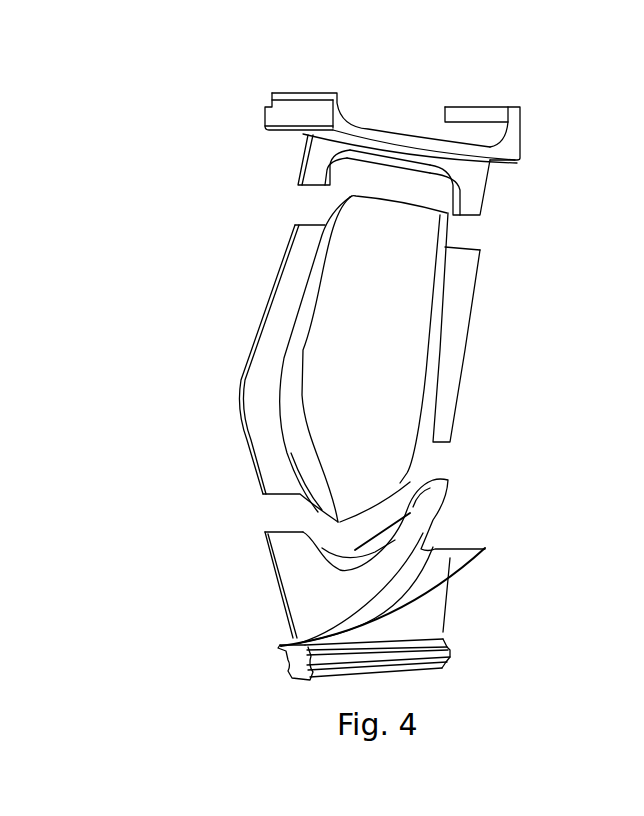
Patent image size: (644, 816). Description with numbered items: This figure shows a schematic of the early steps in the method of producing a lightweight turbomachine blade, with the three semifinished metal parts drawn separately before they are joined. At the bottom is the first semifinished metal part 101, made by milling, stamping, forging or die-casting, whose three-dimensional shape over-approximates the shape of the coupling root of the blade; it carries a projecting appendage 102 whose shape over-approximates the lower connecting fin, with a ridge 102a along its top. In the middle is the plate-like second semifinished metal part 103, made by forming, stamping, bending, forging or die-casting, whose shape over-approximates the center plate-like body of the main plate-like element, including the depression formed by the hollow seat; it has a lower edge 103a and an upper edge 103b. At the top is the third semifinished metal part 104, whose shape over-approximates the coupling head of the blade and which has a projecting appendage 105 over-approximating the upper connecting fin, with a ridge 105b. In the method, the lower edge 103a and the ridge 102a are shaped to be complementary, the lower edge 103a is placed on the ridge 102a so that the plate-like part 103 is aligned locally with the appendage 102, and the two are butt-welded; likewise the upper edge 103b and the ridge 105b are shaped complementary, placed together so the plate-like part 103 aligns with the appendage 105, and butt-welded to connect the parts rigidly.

The first semifinished metal part 101 is at (413, 660).
The projecting appendage 102 is at (422, 533).
The ridge 102a is at (403, 510).
The plate-like second semifinished metal part 103 is at (257, 372).
The lower edge 103a is at (318, 513).
The upper edge 103b is at (365, 193).
The third semifinished metal part 104 is at (408, 138).
The projecting appendage 105 is at (310, 166).
The ridge 105b is at (441, 195).